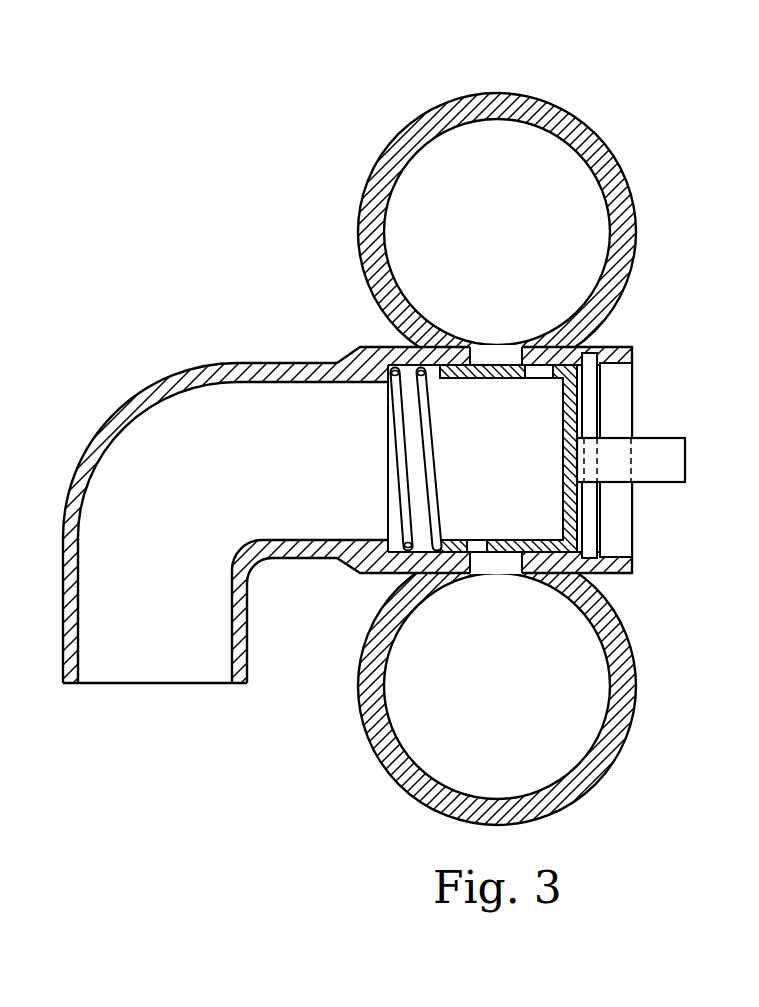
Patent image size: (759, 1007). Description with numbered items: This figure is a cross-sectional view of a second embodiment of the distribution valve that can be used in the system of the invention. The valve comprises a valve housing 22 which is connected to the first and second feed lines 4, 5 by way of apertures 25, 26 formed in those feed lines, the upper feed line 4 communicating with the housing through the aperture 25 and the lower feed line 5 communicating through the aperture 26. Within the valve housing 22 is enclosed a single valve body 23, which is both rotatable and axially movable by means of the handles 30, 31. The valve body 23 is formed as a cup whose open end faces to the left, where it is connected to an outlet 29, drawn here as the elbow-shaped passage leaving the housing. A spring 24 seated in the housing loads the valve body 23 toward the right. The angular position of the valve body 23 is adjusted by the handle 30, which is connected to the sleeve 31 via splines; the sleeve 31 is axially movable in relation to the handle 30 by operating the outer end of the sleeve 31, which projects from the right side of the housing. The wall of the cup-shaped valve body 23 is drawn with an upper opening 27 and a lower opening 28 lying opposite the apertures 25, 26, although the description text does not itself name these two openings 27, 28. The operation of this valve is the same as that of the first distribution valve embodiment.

The first feed line 4 is at (633, 203).
The second feed line 5 is at (633, 657).
The valve housing 22 is at (342, 355).
The valve body 23 is at (577, 522).
The spring 24 is at (390, 435).
The aperture 25 is at (477, 343).
The aperture 26 is at (480, 573).
The upper port of valve body 27 is at (537, 377).
The lower port of valve body 28 is at (482, 540).
The outlet 29 is at (247, 660).
The handle 30 is at (600, 402).
The sleeve 31 is at (687, 465).